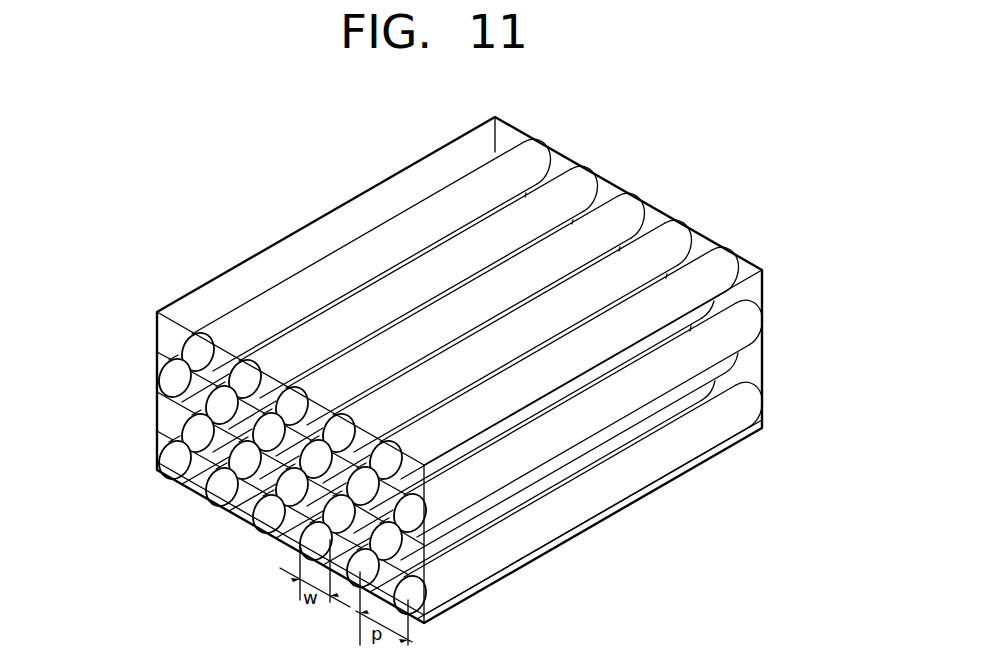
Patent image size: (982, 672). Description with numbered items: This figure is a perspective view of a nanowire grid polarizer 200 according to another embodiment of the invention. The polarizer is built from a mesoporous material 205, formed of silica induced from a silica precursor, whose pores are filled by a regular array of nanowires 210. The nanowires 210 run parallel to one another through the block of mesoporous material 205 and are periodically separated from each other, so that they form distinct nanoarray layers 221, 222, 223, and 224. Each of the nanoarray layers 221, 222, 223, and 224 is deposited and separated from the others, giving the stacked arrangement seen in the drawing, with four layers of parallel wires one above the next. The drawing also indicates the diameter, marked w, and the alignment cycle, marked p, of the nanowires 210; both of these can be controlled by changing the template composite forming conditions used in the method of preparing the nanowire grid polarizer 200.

The nanowire grid polarizer 200 is at (722, 178).
The mesoporous material 205 is at (592, 522).
The nanowires 210 is at (670, 461).
The nanoarray layer 221 is at (153, 435).
The nanoarray layer 222 is at (153, 395).
The nanoarray layer 223 is at (153, 357).
The nanoarray layer 224 is at (153, 318).